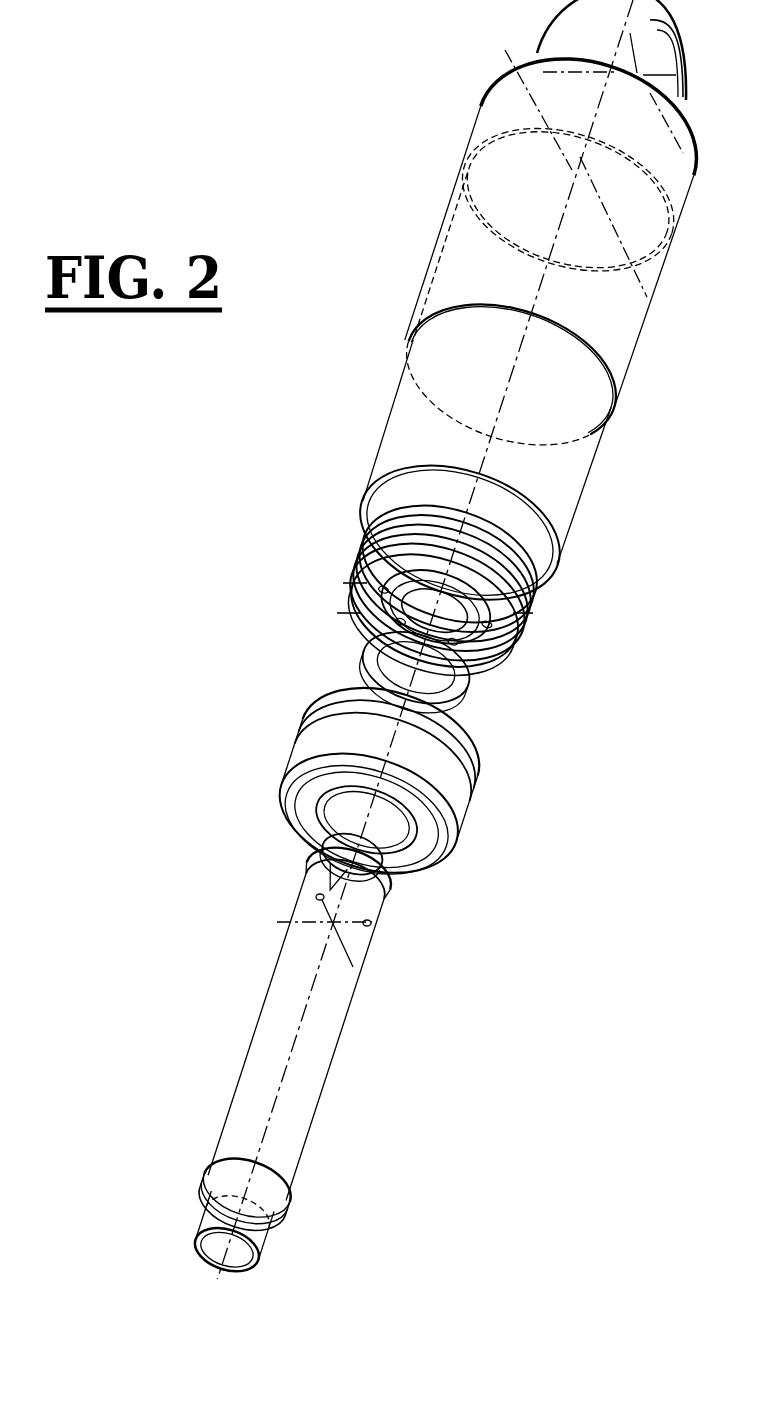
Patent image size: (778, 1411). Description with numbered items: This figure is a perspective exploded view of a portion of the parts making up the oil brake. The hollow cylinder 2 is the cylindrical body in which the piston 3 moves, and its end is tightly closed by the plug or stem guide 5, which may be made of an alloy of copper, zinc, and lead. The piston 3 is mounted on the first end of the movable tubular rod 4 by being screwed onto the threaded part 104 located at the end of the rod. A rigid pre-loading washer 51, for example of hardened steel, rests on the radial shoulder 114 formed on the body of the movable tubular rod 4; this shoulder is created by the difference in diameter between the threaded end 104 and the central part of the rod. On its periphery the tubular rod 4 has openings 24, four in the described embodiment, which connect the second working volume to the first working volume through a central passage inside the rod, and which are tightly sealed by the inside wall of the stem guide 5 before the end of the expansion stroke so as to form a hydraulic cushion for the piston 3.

The hollow cylinder 2 is at (498, 107).
The piston 3 is at (497, 650).
The pre-loading washer 51 is at (462, 698).
The stem guide 5 is at (437, 803).
The threaded part 104 is at (325, 833).
The radial shoulder 114 is at (307, 866).
The opening 24 is at (325, 897).
The movable tubular rod 4 is at (300, 1079).